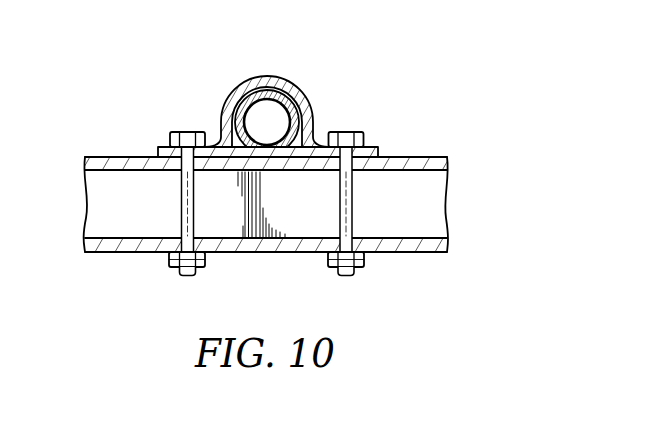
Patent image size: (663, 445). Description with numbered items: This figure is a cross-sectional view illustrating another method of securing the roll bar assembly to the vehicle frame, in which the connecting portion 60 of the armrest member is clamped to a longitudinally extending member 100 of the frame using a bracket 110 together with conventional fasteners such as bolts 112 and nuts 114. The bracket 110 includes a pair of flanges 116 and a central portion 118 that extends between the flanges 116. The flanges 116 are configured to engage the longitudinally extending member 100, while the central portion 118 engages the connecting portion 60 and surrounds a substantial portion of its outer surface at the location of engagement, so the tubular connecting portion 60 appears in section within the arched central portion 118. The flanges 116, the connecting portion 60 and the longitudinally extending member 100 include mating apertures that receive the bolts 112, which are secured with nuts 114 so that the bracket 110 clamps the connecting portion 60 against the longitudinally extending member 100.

The longitudinally extending member 100 is at (283, 253).
The bracket 110 is at (288, 65).
The bolt 112 is at (188, 132).
The nut 114 is at (169, 259).
The flange 116 is at (161, 146).
The central portion 118 is at (240, 88).
The connecting portion 60 is at (260, 78).